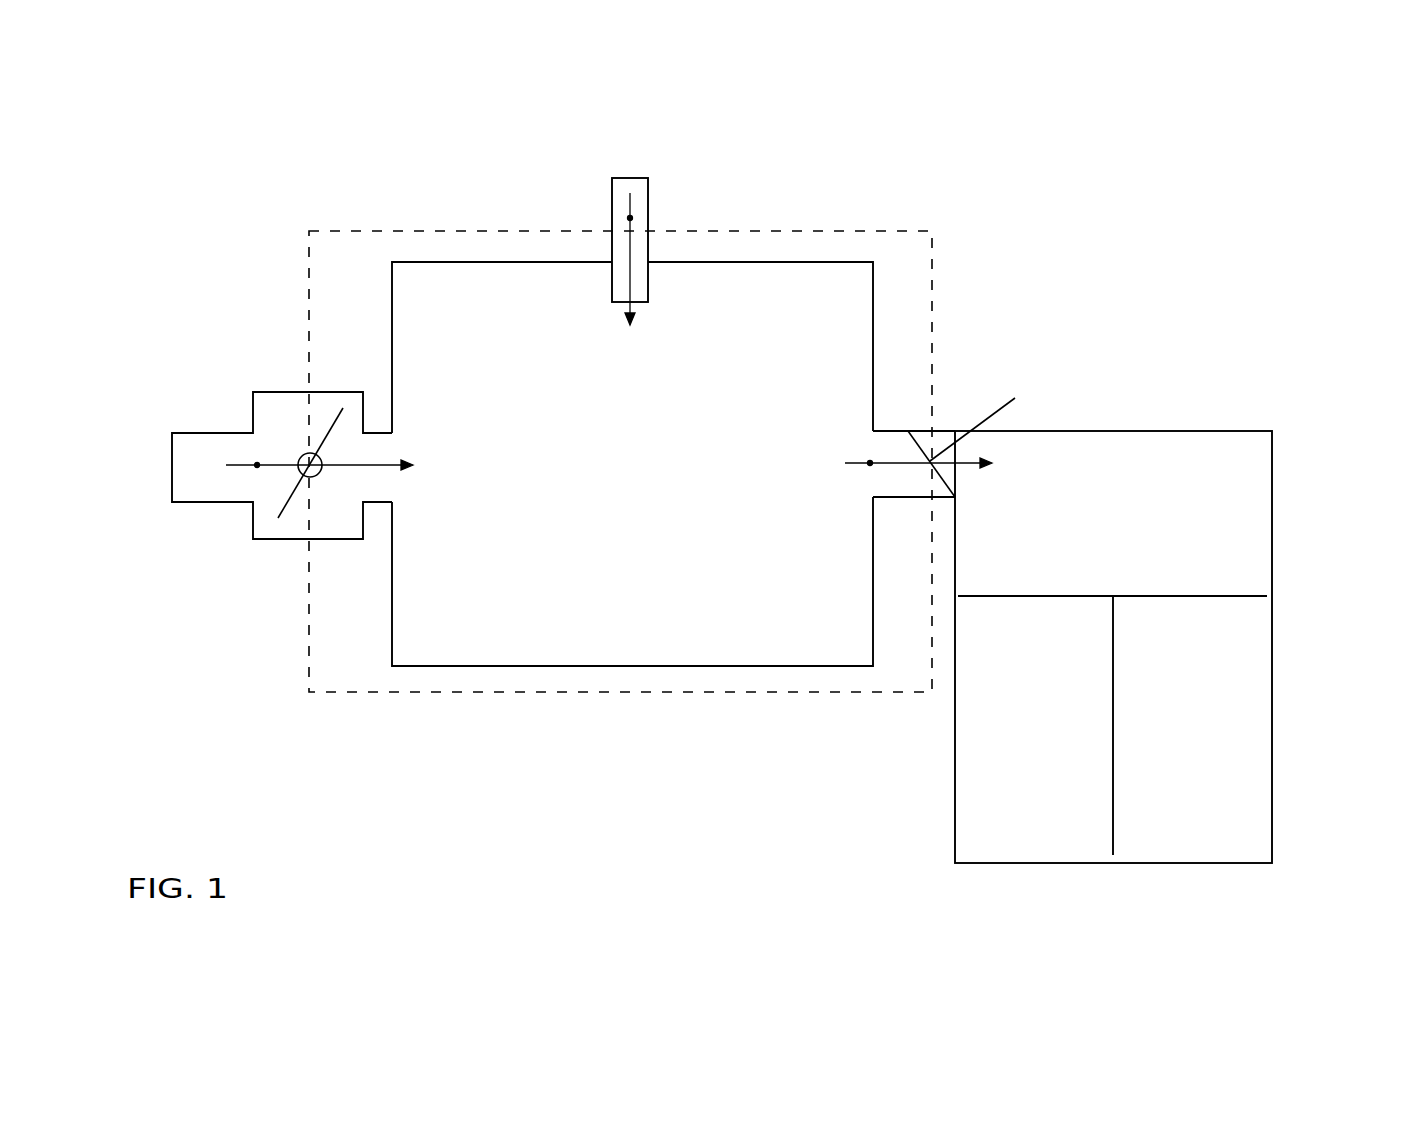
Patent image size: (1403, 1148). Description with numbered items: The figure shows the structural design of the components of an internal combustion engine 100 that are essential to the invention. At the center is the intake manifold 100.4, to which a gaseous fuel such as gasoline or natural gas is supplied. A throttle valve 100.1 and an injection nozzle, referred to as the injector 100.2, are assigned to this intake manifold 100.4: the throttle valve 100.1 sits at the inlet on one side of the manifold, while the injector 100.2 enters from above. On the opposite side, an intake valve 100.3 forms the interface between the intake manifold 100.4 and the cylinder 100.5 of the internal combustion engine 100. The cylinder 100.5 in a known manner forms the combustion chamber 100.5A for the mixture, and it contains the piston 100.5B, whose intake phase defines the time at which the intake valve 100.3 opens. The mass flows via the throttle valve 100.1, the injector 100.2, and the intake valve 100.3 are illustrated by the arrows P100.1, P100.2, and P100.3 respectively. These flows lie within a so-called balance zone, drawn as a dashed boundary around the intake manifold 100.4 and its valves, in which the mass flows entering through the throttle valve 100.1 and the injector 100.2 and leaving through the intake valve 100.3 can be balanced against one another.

The internal combustion engine 100 is at (1072, 157).
The throttle valve 100.1 is at (309, 458).
The arrow illustrating mass flow via the throttle valve P100.1 is at (257, 465).
The injection nozzle (injector) 100.2 is at (630, 178).
The arrow illustrating mass flow via the injector P100.2 is at (630, 218).
The intake valve 100.3 is at (997, 411).
The arrow illustrating mass flow via the intake valve P100.3 is at (870, 463).
The intake manifold 100.4 is at (632, 464).
The cylinder 100.5 is at (1166, 604).
The combustion chamber 100.5A is at (1162, 467).
The piston 100.5B is at (1113, 710).